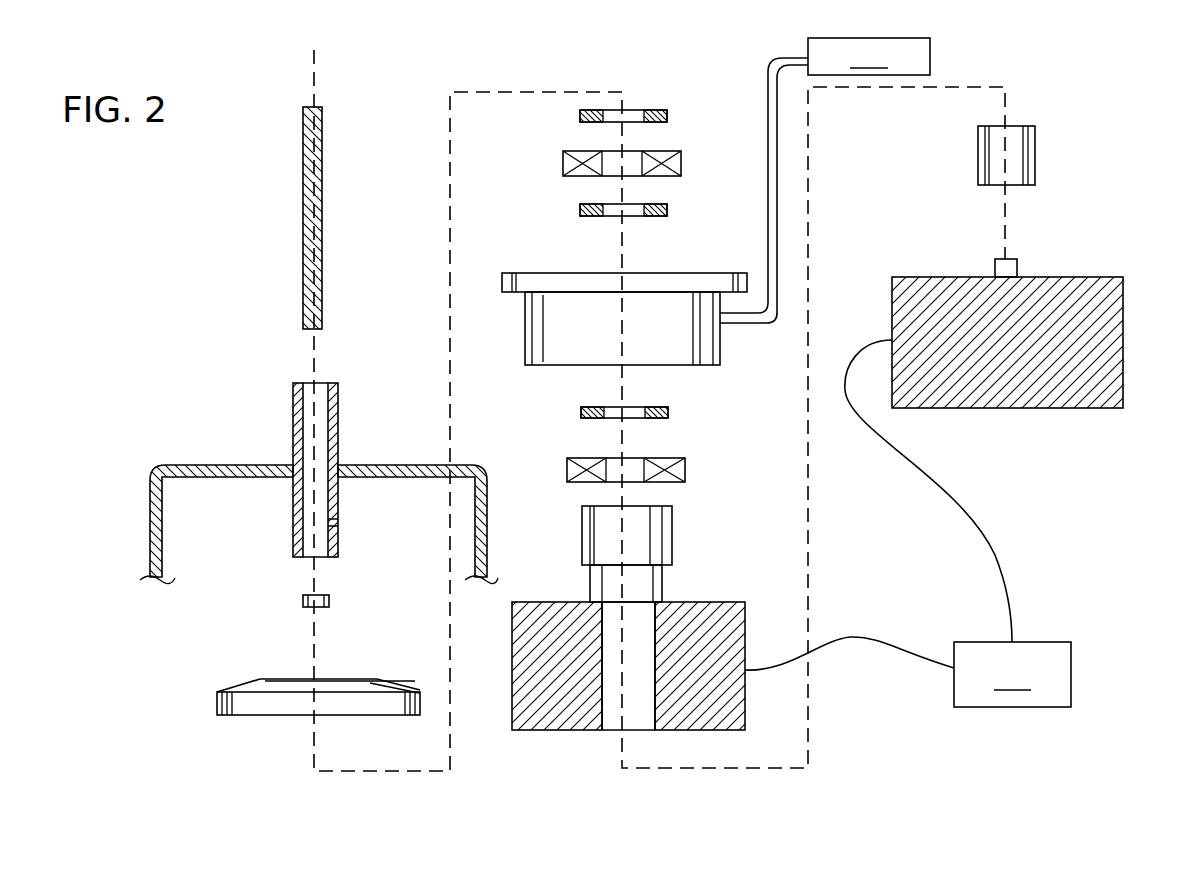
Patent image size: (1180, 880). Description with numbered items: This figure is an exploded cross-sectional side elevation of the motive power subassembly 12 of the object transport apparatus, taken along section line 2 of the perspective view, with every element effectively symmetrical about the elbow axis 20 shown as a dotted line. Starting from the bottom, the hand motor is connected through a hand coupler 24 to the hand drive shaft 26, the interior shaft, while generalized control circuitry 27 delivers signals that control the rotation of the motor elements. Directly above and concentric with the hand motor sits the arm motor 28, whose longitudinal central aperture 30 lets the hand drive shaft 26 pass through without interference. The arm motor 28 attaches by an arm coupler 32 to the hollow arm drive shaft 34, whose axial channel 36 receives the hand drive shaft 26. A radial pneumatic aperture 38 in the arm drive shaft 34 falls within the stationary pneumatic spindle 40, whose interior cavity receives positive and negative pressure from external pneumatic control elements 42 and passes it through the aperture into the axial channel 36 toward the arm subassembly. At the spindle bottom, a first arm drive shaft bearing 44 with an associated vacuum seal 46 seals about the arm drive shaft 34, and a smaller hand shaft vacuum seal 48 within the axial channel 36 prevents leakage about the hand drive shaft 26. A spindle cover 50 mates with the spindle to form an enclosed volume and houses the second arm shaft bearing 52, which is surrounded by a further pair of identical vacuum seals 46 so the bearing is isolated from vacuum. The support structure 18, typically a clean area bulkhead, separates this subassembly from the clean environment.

The section line 2— 2 is at (1123, 355).
The motive power subassembly 12 is at (1116, 685).
The support structure 18 is at (212, 465).
The elbow axis 20 is at (314, 100).
The hand coupler 24 is at (1035, 162).
The hand drive shaft 26 is at (322, 219).
The control circuitry 27 is at (908, 523).
The arm motor 28 is at (556, 732).
The longitudinal central aperture 30 is at (613, 715).
The arm coupler 32 is at (672, 530).
The arm drive shaft 34 is at (345, 417).
The axial channel 36 is at (317, 392).
The pneumatic aperture 38 is at (329, 525).
The pneumatic spindle 40 is at (525, 333).
The pneumatic control elements 42 is at (825, 180).
The first arm drive shaft bearing 44 is at (685, 470).
The vacuum seal 46 is at (667, 120).
The hand shaft vacuum seal 48 is at (329, 601).
The spindle cover 50 is at (345, 689).
The second arm shaft bearing 52 is at (681, 160).